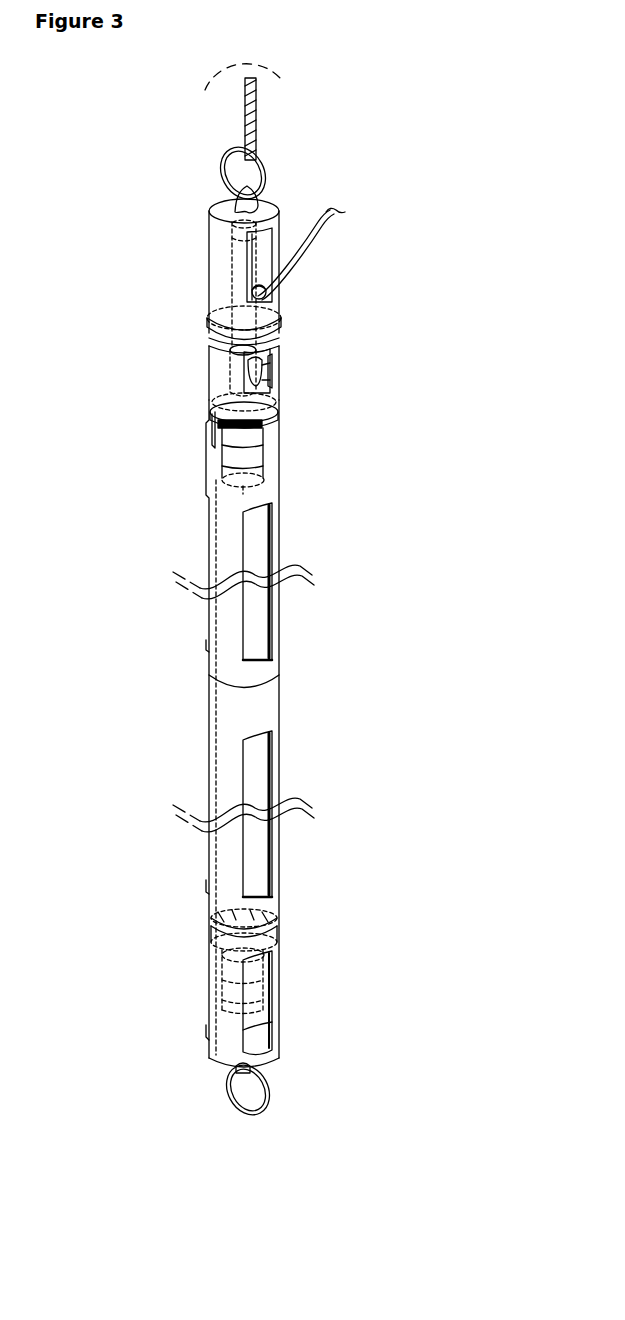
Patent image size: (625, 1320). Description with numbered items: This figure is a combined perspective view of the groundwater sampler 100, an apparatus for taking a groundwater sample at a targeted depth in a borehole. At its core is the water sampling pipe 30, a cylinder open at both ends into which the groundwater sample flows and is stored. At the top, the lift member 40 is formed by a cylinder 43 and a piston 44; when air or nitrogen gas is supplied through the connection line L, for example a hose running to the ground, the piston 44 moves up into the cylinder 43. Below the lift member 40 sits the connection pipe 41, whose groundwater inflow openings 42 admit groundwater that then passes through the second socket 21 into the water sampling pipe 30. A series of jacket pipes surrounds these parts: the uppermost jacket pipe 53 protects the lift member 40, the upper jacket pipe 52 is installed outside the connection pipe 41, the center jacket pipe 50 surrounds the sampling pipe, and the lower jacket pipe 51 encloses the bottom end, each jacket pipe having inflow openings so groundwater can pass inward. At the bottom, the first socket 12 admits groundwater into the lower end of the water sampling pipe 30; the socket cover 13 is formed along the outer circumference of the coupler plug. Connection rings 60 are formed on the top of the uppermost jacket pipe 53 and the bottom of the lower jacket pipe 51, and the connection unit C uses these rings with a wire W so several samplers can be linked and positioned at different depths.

The wire W is at (245, 110).
The connection unit C is at (290, 181).
The connection ring 60 is at (222, 170).
The groundwater sampler 100 is at (375, 410).
The uppermost jacket pipe 53 is at (200, 267).
The lift member 40 is at (178, 308).
The cylinder 43 is at (252, 290).
The piston 44 is at (237, 320).
The connection pipe 41 is at (235, 348).
The upper jacket pipe 52 is at (243, 364).
The groundwater inflow openings 42 is at (266, 370).
The socket cover 13 is at (212, 430).
The second socket 21 is at (268, 442).
The water sampling pipe 30 is at (264, 490).
The center jacket pipe 50 is at (288, 700).
The lower jacket pipe 51 is at (274, 935).
The first socket 12 is at (215, 983).
The connection line L is at (306, 254).